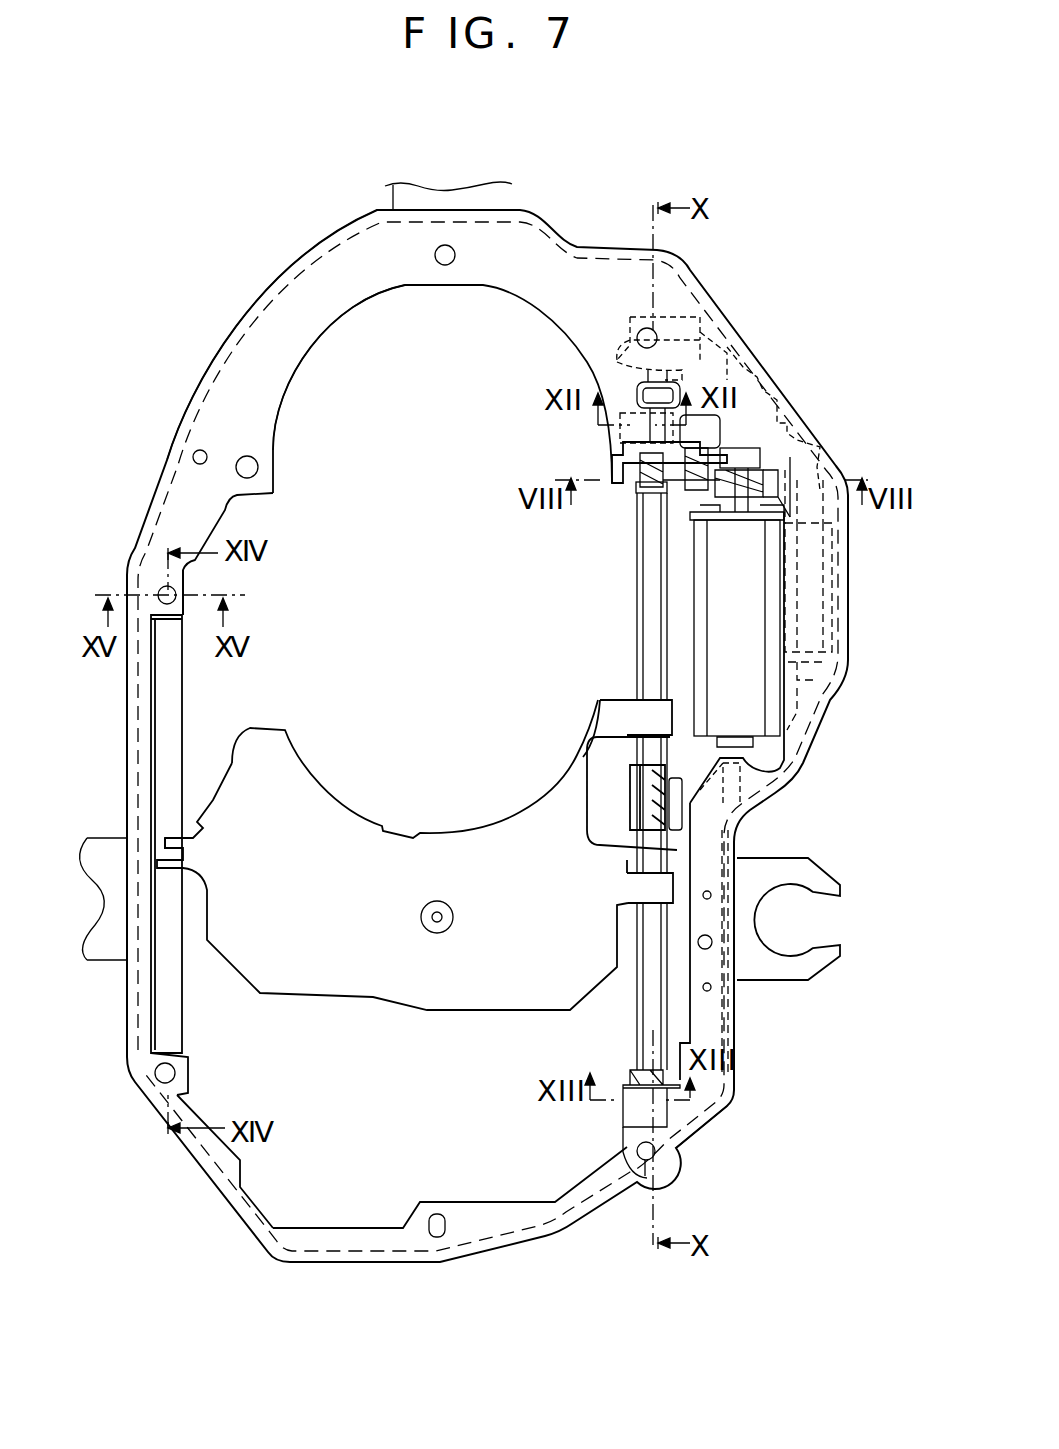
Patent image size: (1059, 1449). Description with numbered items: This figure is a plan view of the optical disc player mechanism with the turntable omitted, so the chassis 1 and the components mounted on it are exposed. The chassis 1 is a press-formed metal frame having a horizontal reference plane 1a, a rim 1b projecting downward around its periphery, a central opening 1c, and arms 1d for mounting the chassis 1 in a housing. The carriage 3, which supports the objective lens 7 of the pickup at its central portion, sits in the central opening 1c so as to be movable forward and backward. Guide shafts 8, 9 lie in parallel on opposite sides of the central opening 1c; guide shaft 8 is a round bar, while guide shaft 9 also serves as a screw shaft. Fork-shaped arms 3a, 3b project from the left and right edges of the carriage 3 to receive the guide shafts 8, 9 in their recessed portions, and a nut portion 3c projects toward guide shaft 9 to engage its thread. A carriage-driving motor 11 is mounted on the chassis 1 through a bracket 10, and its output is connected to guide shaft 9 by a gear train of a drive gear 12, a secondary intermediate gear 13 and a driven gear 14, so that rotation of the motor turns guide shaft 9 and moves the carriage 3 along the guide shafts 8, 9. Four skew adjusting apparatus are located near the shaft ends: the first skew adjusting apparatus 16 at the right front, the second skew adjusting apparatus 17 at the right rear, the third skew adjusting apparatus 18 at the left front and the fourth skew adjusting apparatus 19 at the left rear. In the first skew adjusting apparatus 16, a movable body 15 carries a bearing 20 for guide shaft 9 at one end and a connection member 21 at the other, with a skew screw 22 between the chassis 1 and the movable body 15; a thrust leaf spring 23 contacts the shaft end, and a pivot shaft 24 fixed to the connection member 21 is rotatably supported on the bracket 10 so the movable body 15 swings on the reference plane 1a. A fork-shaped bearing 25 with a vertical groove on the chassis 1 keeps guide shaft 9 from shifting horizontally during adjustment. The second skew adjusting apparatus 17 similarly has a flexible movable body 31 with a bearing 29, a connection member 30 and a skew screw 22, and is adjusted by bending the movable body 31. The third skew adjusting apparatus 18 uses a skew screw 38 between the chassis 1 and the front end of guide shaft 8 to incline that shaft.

The chassis 1 is at (307, 282).
The horizontal reference plane 1a is at (258, 390).
The rim 1b is at (233, 317).
The central opening 1c is at (317, 337).
The arms 1d is at (813, 967).
The carriage 3 is at (537, 800).
The fork-shaped arm 3a is at (157, 860).
The fork-shaped arm 3b is at (653, 710).
The nut portion 3c is at (675, 805).
The objective lens 7 is at (437, 920).
The guide shaft 8 is at (183, 695).
The guide shaft 9 is at (633, 643).
The bracket 10 is at (663, 520).
The carriage-driving motor 11 is at (697, 593).
The drive gear 12 is at (777, 450).
The secondary intermediate gear 13 is at (730, 437).
The driven gear 14 is at (613, 457).
The movable body 15 is at (733, 337).
The first skew adjusting apparatus 16 is at (697, 345).
The second skew adjusting apparatus 17 is at (698, 1142).
The third skew adjusting apparatus 18 is at (203, 583).
The fourth skew adjusting apparatus 19 is at (195, 1071).
The bearing 20 is at (637, 393).
The connection member 21 is at (822, 450).
The skew screw 22 is at (655, 335).
The thrust leaf spring 23 is at (612, 365).
The pivot shaft 24 is at (832, 683).
The fork-shaped bearing 25 is at (617, 433).
The bearing 29 is at (633, 1067).
The connection member 30 is at (730, 948).
The movable body 31 is at (730, 1047).
The skew screw 38 is at (165, 586).